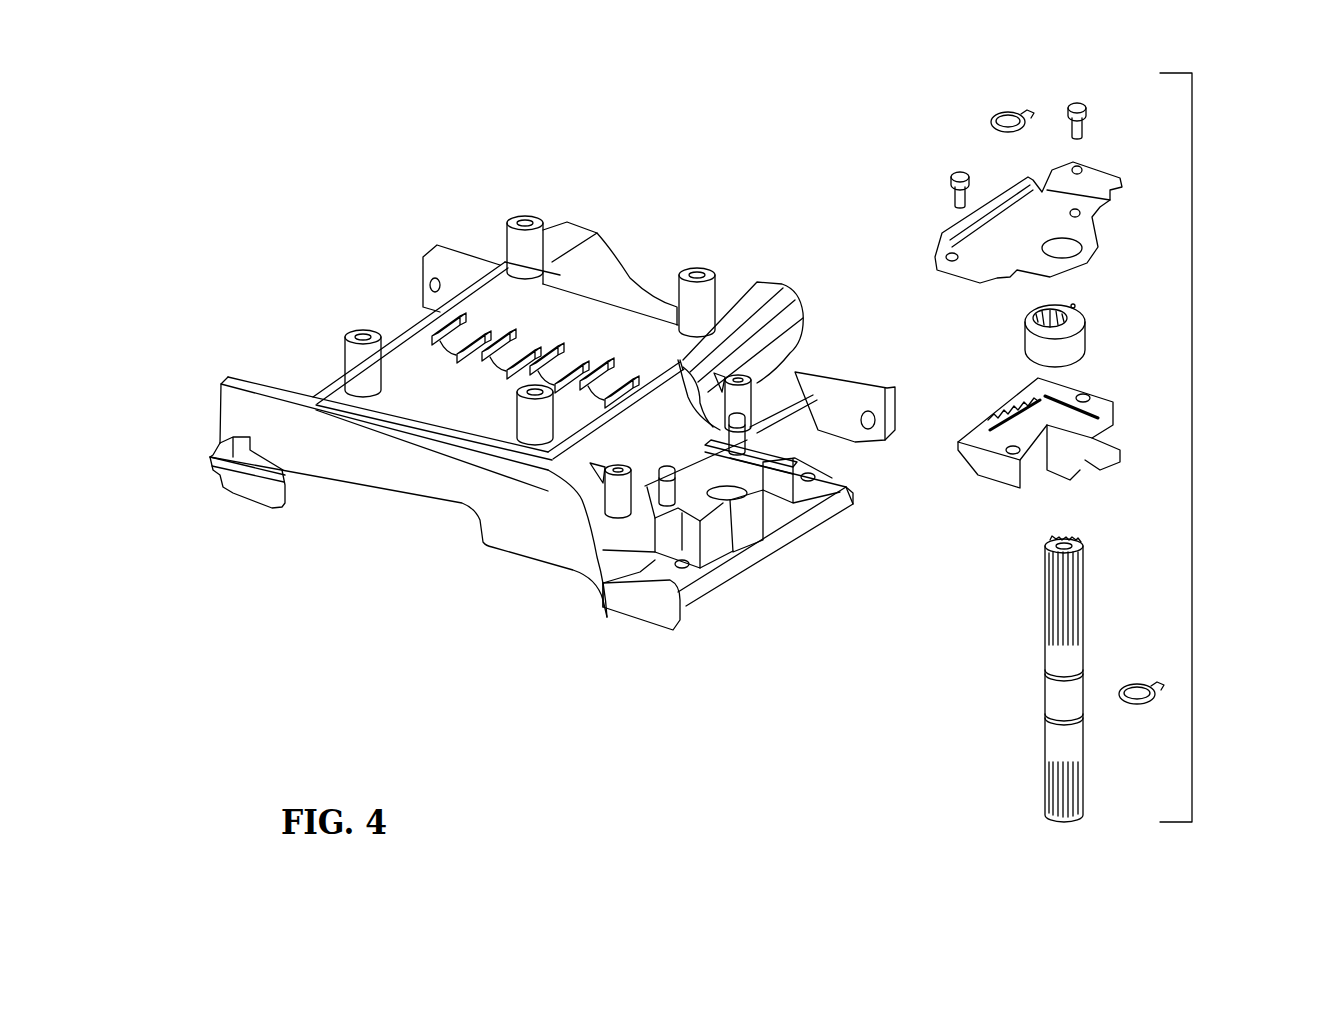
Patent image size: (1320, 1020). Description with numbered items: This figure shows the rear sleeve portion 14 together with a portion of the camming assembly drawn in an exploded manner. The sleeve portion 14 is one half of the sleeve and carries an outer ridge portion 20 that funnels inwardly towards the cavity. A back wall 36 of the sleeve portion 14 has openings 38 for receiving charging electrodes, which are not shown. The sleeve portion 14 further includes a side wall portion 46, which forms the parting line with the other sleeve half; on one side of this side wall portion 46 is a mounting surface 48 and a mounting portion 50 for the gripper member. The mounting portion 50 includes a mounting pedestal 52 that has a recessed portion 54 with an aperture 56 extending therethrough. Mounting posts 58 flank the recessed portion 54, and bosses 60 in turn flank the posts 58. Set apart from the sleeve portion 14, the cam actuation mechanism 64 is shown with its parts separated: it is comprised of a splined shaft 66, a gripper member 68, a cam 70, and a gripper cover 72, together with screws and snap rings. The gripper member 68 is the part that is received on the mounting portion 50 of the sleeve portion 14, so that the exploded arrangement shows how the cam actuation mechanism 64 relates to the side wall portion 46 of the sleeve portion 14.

The sleeve portion 14 is at (712, 170).
The outer ridge portion 20 is at (508, 518).
The back wall 36 is at (587, 315).
The openings 38 is at (514, 338).
The side wall portion 46 is at (722, 587).
The mounting surface 48 is at (776, 550).
The mounting portion 50 is at (746, 537).
The mounting pedestal 52 is at (672, 587).
The recessed portion 54 is at (853, 488).
The aperture 56 is at (762, 494).
The mounting posts 58 is at (745, 428).
The bosses 60 is at (743, 395).
The cam actuation mechanism 64 is at (1192, 445).
The splined shaft 66 is at (1040, 712).
The gripper member 68 is at (975, 413).
The cam 70 is at (1090, 318).
The gripper cover 72 is at (940, 238).